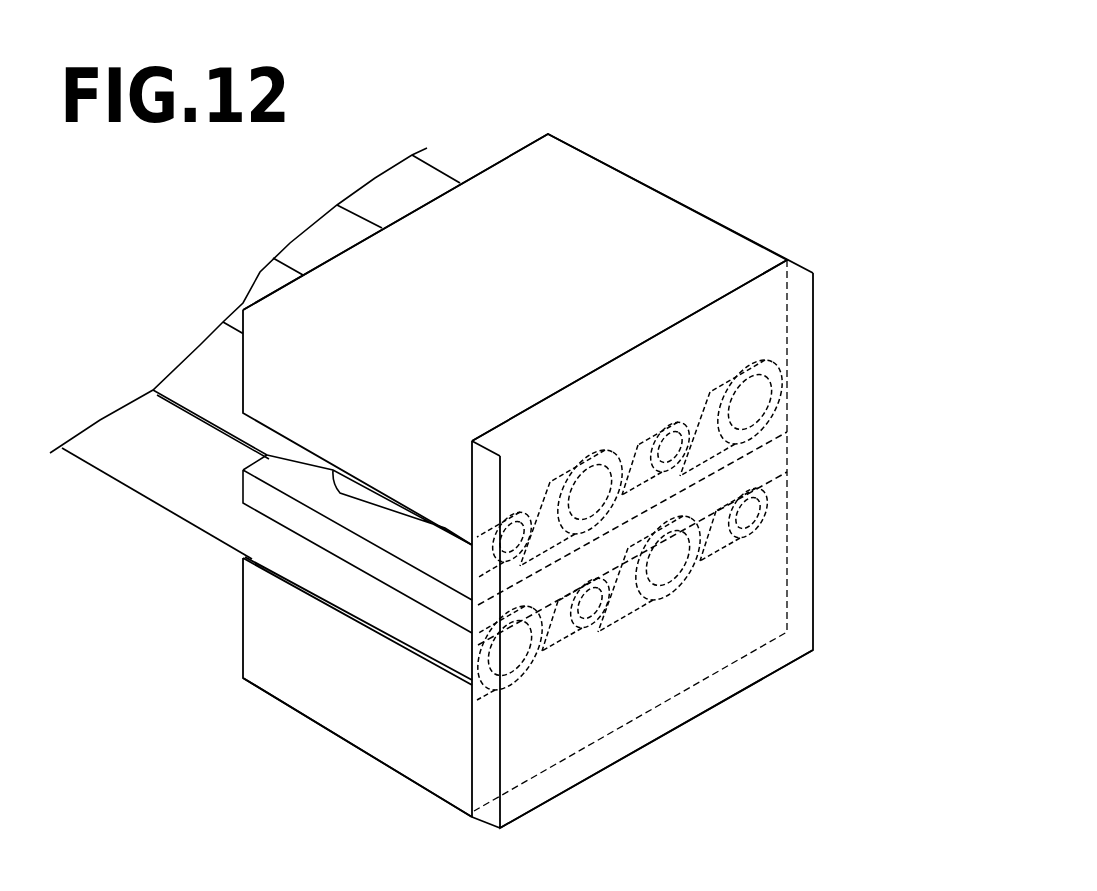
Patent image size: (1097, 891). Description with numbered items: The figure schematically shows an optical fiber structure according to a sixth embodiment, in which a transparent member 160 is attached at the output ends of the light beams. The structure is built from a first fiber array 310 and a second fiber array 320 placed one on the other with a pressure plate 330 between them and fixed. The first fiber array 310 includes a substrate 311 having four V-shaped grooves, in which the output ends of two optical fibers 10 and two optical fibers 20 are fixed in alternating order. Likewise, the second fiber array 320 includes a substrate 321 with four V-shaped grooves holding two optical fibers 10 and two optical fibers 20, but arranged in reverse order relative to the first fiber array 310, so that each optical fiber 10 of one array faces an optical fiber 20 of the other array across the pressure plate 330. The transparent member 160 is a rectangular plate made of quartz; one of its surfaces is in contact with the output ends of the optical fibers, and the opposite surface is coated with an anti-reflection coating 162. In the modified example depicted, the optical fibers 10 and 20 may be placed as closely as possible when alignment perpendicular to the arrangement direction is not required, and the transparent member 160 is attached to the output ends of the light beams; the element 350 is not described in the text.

The optical fiber 10 is at (690, 420).
The optical fiber 20 is at (783, 385).
The transparent member 160 is at (816, 504).
The anti-reflection coating 162 is at (742, 692).
The first fiber array 310 is at (853, 307).
The substrate 311 is at (615, 210).
The second fiber array 320 is at (853, 603).
The substrate 321 is at (393, 769).
The pressure plate 330 is at (795, 433).
The flexible flat cable 350 is at (505, 80).